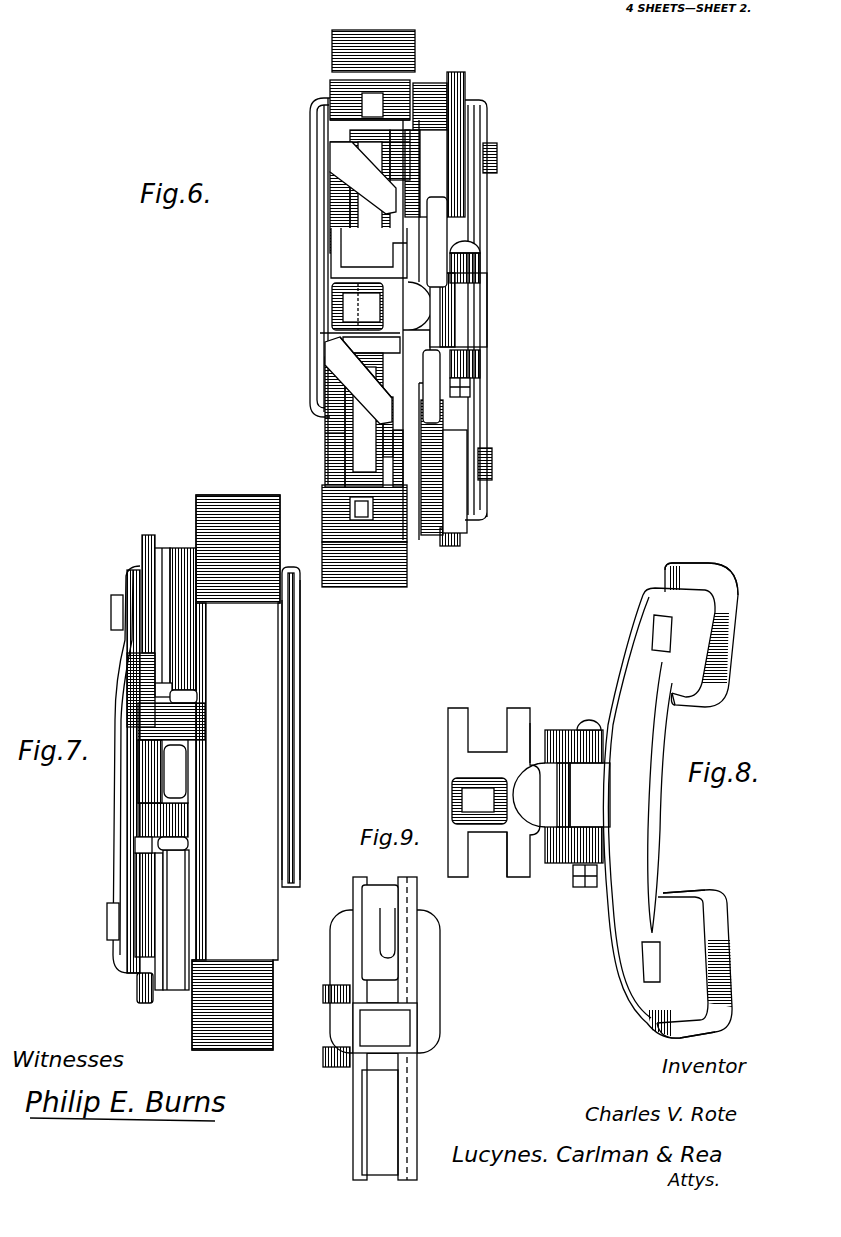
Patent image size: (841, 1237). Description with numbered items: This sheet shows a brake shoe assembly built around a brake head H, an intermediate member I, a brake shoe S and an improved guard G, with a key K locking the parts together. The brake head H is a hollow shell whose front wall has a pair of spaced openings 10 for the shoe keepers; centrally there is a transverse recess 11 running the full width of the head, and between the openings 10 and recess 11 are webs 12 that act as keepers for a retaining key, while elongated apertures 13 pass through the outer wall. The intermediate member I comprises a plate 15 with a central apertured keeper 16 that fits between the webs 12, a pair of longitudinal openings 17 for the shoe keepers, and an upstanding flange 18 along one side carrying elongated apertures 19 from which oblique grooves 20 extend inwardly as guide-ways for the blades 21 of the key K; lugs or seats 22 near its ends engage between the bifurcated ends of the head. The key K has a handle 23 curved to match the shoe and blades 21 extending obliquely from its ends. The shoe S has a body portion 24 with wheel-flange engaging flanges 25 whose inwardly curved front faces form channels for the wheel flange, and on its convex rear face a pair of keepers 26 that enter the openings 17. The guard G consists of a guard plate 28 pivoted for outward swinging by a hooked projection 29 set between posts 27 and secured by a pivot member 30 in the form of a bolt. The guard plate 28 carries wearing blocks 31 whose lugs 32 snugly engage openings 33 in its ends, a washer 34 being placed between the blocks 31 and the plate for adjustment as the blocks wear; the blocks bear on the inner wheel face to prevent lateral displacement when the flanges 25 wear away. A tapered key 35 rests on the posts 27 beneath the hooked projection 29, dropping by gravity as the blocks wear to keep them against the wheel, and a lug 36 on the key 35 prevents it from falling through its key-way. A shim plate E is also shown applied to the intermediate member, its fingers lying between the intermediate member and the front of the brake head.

In FIG. 9, the openings 10 is at (390, 897).
In FIG. 9, the transverse recess 11 is at (395, 1030).
In FIG. 9, the webs 12 is at (382, 1030).
In FIG. 9, the elongated apertures 13 is at (412, 940).
In FIG. 6, the plate 15 is at (330, 440).
In FIG. 8, the plate 15 is at (520, 870).
In FIG. 6, the keeper 16 is at (345, 308).
In FIG. 8, the keeper 16 is at (479, 801).
In FIG. 6, the longitudinally extending openings 17 is at (362, 248).
In FIG. 6, the upstanding flange 18 is at (320, 184).
In FIG. 7, the upstanding flange 18 is at (285, 628).
In FIG. 6, the elongated apertures 19 is at (326, 166).
In FIG. 6, the grooves 20 is at (345, 138).
In FIG. 6, the blades 21 is at (338, 393).
In FIG. 6, the lugs or seats 22 is at (385, 92).
In FIG. 7, the handle portion 23 is at (296, 700).
In FIG. 7, the body portion 24 is at (257, 668).
In FIG. 6, the wheel-flange engaging flanges 25 is at (433, 140).
In FIG. 7, the wheel-flange engaging flanges 25 is at (178, 548).
In FIG. 6, the keepers 26 is at (366, 200).
In FIG. 6, the posts 27 is at (470, 270).
In FIG. 7, the posts 27 is at (145, 725).
In FIG. 9, the posts 27 is at (330, 1055).
In FIG. 8, the posts 27 is at (562, 730).
In FIG. 8, the guard plate 28 is at (677, 703).
In FIG. 6, the hooked projection 29 is at (490, 323).
In FIG. 7, the hooked projection 29 is at (140, 785).
In FIG. 8, the hooked projection 29 is at (561, 775).
In FIG. 6, the pivot member 30 is at (480, 243).
In FIG. 8, the pivot member 30 is at (589, 727).
In FIG. 6, the wearing blocks 31 is at (468, 83).
In FIG. 7, the wearing blocks 31 is at (150, 535).
In FIG. 8, the wearing blocks 31 is at (707, 577).
In FIG. 6, the lugs or projections 32 is at (498, 165).
In FIG. 7, the lugs or projections 32 is at (111, 612).
In FIG. 8, the lugs or projections 32 is at (662, 632).
In FIG. 8, the openings 33 is at (663, 957).
In FIG. 6, the washer 34 is at (480, 125).
In FIG. 7, the washer 34 is at (142, 560).
In FIG. 6, the key 35 is at (440, 218).
In FIG. 7, the key 35 is at (197, 701).
In FIG. 7, the lug 36 is at (155, 690).
In FIG. 6, the guard G is at (490, 352).
In FIG. 7, the guard G is at (115, 705).
In FIG. 8, the guard G is at (671, 800).
In FIG. 6, the key K is at (310, 278).
In FIG. 7, the key K is at (299, 740).
In FIG. 6, the shim plate E is at (338, 262).
In FIG. 6, the intermediate member I is at (392, 537).
In FIG. 8, the intermediate member I is at (475, 725).
In FIG. 6, the brake shoe S is at (408, 575).
In FIG. 7, the brake shoe S is at (236, 772).
In FIG. 9, the brake head H is at (352, 895).